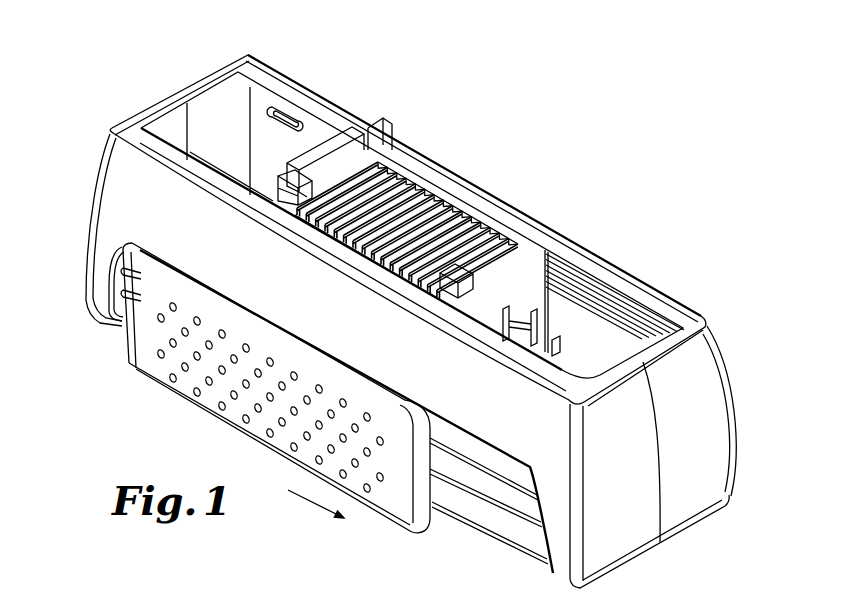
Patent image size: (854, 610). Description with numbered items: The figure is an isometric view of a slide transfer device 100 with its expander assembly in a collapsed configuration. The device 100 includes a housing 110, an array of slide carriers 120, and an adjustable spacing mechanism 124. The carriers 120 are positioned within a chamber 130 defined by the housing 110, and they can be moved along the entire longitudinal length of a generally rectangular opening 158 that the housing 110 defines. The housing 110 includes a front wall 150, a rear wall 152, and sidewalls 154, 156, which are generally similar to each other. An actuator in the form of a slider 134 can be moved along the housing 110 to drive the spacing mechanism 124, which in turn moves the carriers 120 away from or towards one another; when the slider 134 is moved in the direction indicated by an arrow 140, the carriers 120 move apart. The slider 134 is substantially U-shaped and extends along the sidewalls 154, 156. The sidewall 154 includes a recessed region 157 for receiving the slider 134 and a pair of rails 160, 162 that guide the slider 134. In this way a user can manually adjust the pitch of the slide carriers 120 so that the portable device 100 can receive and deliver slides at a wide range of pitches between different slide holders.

The slide transfer device 100 is at (572, 202).
The housing 110 is at (590, 252).
The slide carriers 120 is at (417, 160).
The adjustable spacing mechanism 124 is at (298, 148).
The chamber 130 is at (594, 337).
The slider 134 is at (153, 382).
The arrow 140 is at (315, 513).
The front wall 150 is at (690, 493).
The rear wall 152 is at (138, 117).
The sidewall 154 is at (150, 193).
The sidewall 156 is at (447, 170).
The recessed region 157 is at (142, 260).
The opening 158 is at (222, 121).
The rail 160 is at (477, 507).
The rail 162 is at (523, 502).